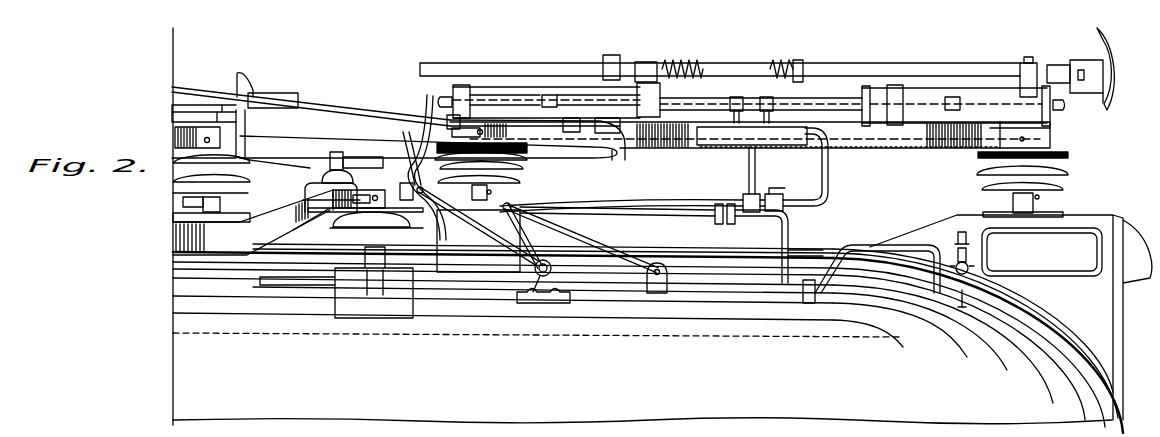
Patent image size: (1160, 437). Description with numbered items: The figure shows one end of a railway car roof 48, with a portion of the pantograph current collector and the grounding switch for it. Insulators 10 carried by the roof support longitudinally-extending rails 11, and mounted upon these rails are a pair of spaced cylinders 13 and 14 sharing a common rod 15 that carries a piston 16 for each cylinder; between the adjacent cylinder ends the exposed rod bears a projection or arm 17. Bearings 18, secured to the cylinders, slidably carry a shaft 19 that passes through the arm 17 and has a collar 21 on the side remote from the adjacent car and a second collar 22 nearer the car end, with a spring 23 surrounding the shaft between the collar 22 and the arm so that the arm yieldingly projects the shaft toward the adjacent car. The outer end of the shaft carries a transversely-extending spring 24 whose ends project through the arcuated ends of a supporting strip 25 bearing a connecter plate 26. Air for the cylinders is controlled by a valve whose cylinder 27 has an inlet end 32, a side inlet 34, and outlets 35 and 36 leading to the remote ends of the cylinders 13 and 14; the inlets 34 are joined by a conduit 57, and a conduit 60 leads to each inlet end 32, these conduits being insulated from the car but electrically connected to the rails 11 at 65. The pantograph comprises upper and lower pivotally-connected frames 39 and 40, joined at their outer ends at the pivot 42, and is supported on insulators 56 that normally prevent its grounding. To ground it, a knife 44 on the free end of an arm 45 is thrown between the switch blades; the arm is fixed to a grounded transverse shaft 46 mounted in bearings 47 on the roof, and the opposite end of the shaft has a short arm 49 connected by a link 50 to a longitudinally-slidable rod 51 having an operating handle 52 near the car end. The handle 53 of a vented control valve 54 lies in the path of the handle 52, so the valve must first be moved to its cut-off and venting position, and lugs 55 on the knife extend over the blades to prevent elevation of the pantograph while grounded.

The insulators 10 is at (530, 182).
The rails 11 is at (857, 147).
The cylinder 13 is at (572, 92).
The cylinder 14 is at (923, 97).
The rod 15 is at (783, 95).
The piston 16 is at (576, 113).
The arm 17 is at (657, 88).
The bearings 18 is at (1028, 62).
The shaft 19 is at (547, 62).
The collar 21 is at (638, 65).
The second collar 22 is at (802, 63).
The spring 23 is at (680, 62).
The transversely-extending spring 24 is at (1083, 62).
The supporting strip 25 is at (1102, 92).
The connecter plate 26 is at (1112, 75).
The cylinder 27 is at (728, 148).
The inlet end 32 is at (825, 165).
The inlet 34 is at (757, 158).
The outlet 35 is at (737, 115).
The outlet 36 is at (773, 113).
The upper frame 39 is at (358, 103).
The lower frame 40 is at (343, 136).
The pivotal connection 42 is at (623, 145).
The knife 44 is at (420, 223).
The arm 45 is at (502, 223).
The shaft 46 is at (542, 275).
The bearings 47 is at (557, 303).
The car roof 48 is at (540, 370).
The short arm 49 is at (500, 250).
The link 50 is at (597, 243).
The rod 51 is at (593, 287).
The operating handle 52 is at (933, 288).
The handle 53 is at (1010, 280).
The control valve 54 is at (955, 250).
The lugs 55 is at (418, 165).
The insulators 56 is at (283, 235).
The conduit 57 is at (667, 197).
The conduit 60 is at (793, 207).
The electrical connection 65 is at (433, 160).